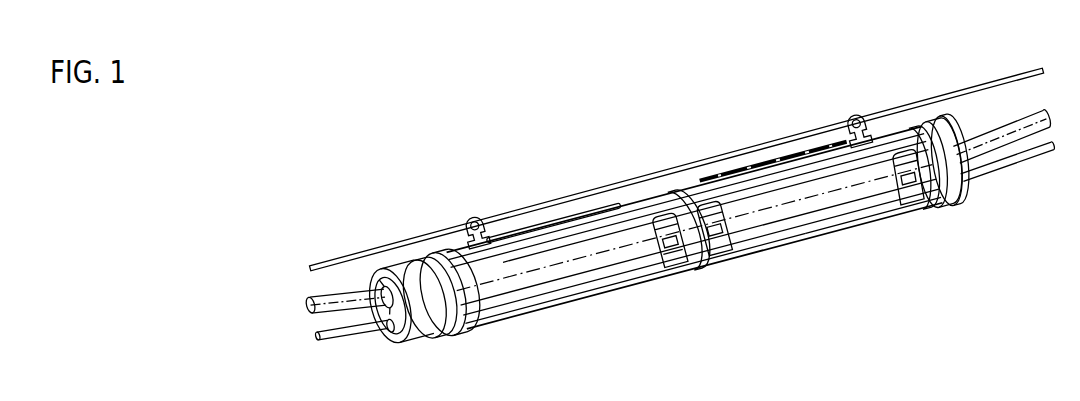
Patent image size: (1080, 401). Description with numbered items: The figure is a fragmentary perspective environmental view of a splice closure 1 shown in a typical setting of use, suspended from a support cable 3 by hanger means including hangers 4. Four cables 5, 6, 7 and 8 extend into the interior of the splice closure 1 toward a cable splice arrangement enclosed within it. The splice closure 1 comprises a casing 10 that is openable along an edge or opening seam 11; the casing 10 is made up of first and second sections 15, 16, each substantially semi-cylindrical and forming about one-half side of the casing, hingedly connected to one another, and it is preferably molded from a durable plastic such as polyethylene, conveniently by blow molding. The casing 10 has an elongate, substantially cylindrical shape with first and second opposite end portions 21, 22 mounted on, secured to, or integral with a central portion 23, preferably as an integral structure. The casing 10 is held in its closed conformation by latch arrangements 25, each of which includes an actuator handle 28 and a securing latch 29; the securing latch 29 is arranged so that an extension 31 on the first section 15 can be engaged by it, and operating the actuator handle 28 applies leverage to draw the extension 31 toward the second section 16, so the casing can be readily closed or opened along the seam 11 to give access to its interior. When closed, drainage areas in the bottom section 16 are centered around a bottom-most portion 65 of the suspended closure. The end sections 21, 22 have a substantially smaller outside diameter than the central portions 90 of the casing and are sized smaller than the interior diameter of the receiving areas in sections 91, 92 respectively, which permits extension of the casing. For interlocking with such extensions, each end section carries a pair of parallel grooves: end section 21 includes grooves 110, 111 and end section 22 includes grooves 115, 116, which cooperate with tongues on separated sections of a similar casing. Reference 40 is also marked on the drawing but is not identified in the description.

The splice closure 1 is at (650, 308).
The support cable 3 is at (584, 197).
The hangers 4 is at (467, 221).
The cable 5 is at (343, 302).
The cable 6 is at (350, 337).
The cable 7 is at (1023, 117).
The cable 8 is at (1037, 148).
The casing 10 is at (753, 240).
The opening seam 11 is at (448, 322).
The first section 15 is at (646, 205).
The second section 16 is at (565, 300).
The first end portion 21 is at (426, 262).
The second end portion 22 is at (936, 132).
The central portion 23 is at (738, 260).
The latch arrangement 25 is at (506, 290).
The actuator handle 28 is at (666, 266).
The securing latch 29 is at (658, 230).
The extension 31 is at (714, 200).
The aperture 40 is at (391, 330).
The bottom-most portion 65 is at (598, 302).
The central portions 90 is at (680, 276).
The section 91 is at (501, 318).
The section 92 is at (869, 224).
The groove 110 is at (419, 339).
The groove 111 is at (421, 260).
The groove 115 is at (915, 128).
The groove 116 is at (946, 137).